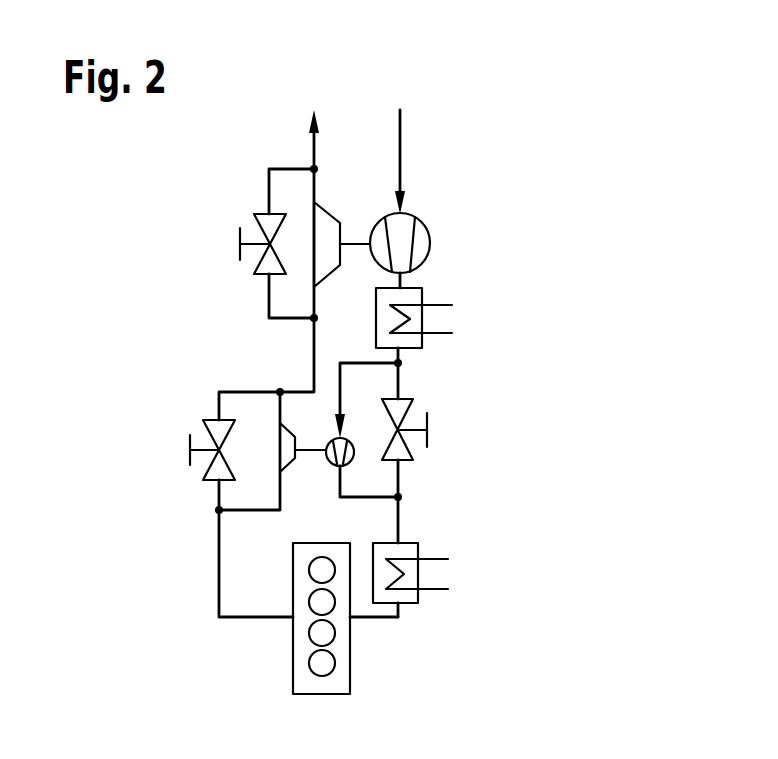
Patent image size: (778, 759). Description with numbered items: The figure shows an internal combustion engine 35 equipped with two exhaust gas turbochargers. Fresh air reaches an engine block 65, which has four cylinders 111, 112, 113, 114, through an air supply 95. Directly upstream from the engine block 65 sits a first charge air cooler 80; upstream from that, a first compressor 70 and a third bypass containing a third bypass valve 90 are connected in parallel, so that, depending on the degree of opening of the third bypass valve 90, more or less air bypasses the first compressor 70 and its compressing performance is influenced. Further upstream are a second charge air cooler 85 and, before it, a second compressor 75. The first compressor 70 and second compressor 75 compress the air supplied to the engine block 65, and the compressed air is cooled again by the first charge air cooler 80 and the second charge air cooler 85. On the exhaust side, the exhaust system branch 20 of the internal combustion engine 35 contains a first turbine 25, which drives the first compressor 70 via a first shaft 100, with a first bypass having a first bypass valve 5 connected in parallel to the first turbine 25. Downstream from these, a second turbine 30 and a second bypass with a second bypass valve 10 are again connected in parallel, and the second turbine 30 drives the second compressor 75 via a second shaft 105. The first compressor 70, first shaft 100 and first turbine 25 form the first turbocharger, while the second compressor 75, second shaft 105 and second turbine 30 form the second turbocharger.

The first bypass valve 5 is at (205, 472).
The second bypass valve 10 is at (255, 220).
The exhaust system branch 20 is at (312, 338).
The first turbine 25 is at (285, 460).
The second turbine 30 is at (328, 237).
The internal combustion engine 35 is at (592, 207).
The engine block 65 is at (336, 690).
The first compressor 70 is at (347, 458).
The second compressor 75 is at (420, 238).
The first charge air cooler 80 is at (410, 600).
The second charge air cooler 85 is at (419, 297).
The third bypass valve 90 is at (413, 403).
The air supply 95 is at (401, 150).
The first shaft 100 is at (318, 447).
The second shaft 105 is at (355, 237).
The cylinder 111 is at (317, 575).
The cylinder 112 is at (325, 605).
The cylinder 113 is at (317, 636).
The cylinder 114 is at (325, 666).